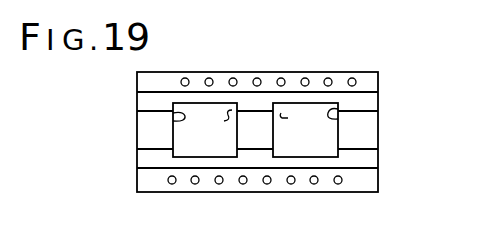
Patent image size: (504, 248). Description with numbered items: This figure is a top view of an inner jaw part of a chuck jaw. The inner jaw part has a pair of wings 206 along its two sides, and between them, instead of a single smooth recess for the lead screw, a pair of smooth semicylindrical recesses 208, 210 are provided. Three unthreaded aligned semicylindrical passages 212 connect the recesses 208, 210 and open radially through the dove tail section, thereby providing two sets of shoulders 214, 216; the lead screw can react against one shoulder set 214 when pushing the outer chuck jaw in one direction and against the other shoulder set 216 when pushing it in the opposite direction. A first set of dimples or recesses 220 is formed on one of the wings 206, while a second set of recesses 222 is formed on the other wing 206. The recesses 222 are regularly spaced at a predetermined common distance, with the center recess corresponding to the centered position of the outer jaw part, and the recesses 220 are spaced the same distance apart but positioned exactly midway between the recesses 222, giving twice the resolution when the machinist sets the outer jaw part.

The wings 206 is at (364, 80).
The semicylindrical recess 208 is at (215, 107).
The semicylindrical recess 210 is at (284, 107).
The semicylindrical passages 212 is at (157, 133).
The shoulder set 214 is at (173, 121).
The shoulder set 216 is at (340, 120).
The recesses 220 is at (203, 185).
The recesses 222 is at (188, 78).